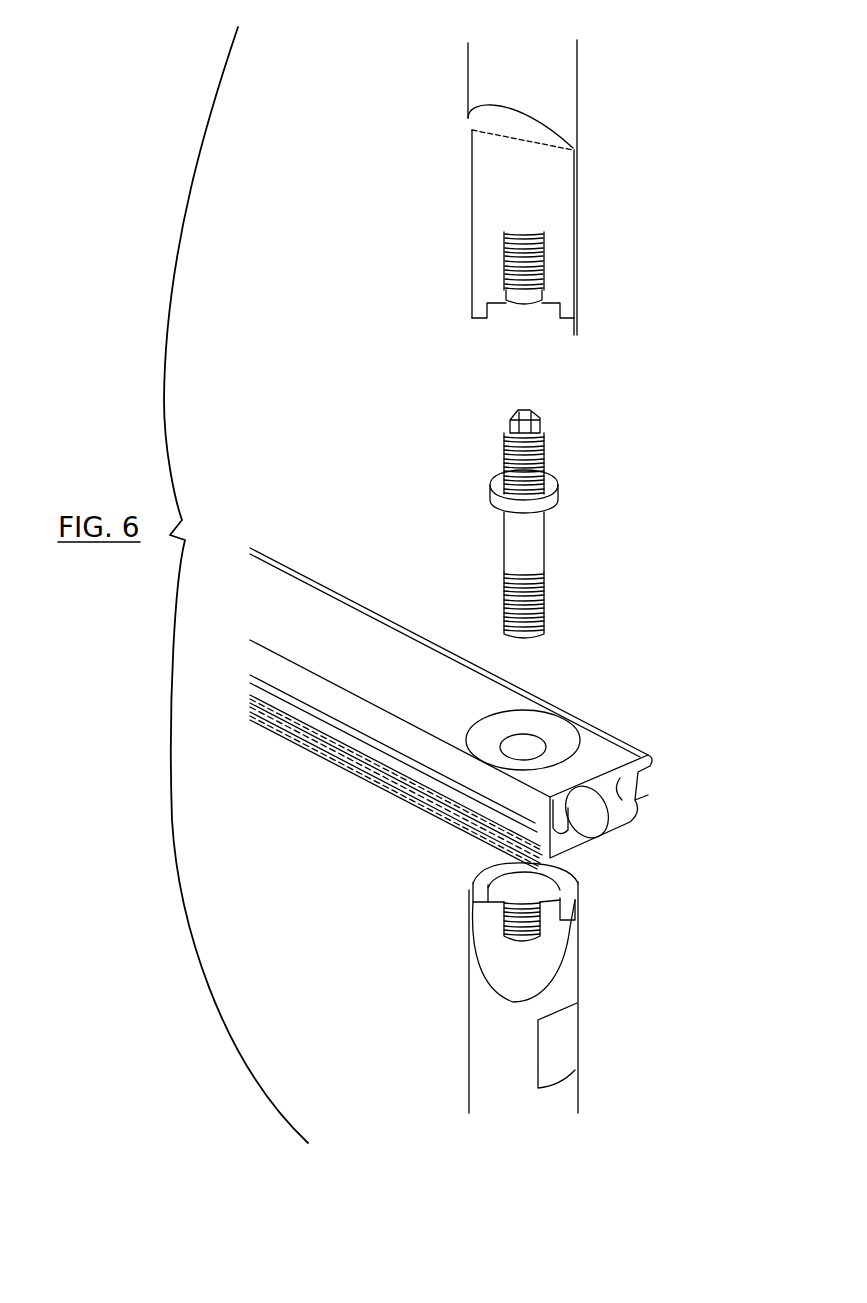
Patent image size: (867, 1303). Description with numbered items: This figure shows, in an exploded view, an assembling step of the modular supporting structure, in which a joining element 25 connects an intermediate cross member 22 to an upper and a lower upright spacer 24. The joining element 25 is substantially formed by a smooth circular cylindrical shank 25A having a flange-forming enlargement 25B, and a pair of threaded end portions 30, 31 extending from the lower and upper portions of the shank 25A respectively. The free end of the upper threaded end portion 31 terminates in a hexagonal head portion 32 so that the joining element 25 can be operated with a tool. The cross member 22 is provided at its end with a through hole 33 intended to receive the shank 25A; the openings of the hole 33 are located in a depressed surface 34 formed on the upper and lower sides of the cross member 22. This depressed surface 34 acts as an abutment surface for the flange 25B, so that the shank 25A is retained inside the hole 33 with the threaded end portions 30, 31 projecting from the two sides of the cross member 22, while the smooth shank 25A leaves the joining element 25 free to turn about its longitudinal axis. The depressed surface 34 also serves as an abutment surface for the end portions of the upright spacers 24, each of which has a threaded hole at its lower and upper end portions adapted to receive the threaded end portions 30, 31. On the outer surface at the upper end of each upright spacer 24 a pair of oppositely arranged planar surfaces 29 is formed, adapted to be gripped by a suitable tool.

The cross member 22 is at (481, 708).
The upright spacer 24 is at (558, 564).
The joining element 25 is at (522, 491).
The shank 25A is at (500, 548).
The flange-forming enlargement 25B is at (490, 490).
The planar surfaces 29 is at (558, 1042).
The lower threaded end portion 30 is at (548, 605).
The upper threaded end portion 31 is at (548, 450).
The hexagonal head portion 32 is at (510, 412).
The through hole 33 is at (522, 740).
The depressed surface 34 is at (560, 740).